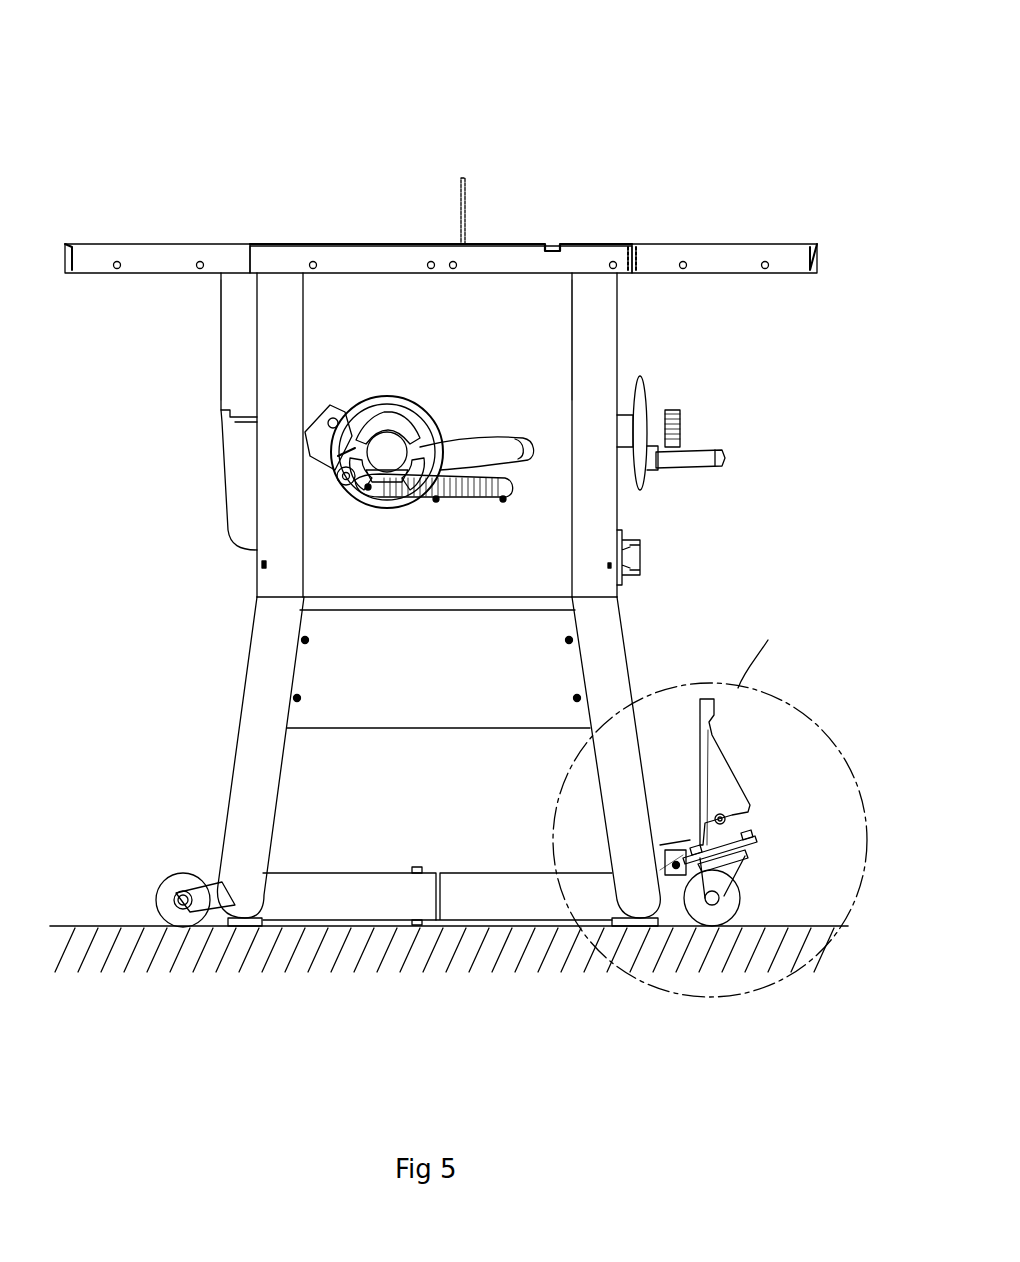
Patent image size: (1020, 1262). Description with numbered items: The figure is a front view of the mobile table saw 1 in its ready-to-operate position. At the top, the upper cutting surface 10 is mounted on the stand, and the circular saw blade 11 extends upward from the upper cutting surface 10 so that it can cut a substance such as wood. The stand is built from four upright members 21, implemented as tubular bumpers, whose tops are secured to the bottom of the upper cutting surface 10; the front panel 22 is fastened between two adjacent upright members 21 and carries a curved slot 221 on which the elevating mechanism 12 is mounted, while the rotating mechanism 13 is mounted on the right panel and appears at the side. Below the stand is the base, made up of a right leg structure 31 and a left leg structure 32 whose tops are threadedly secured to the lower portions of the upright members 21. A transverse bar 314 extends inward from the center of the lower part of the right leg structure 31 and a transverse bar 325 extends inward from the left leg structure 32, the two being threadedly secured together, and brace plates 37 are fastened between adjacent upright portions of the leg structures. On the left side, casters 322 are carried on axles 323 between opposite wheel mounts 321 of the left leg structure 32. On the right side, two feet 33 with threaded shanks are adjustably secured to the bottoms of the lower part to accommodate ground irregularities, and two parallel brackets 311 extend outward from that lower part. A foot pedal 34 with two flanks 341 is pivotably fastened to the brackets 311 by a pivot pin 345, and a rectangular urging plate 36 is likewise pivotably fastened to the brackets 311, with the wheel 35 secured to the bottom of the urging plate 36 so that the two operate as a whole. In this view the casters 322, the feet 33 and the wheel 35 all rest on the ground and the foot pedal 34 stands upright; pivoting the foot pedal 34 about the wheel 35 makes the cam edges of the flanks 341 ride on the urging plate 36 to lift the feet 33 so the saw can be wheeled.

The mobile table saw 1 is at (577, 124).
The upper cutting surface 10 is at (592, 265).
The circular saw blade 11 is at (461, 181).
The elevating mechanism 12 is at (338, 456).
The rotating mechanism 13 is at (700, 456).
The upright members 21 is at (272, 340).
The front panel 22 is at (345, 378).
The curved slot 221 is at (523, 462).
The right leg structure 31 is at (600, 657).
The left leg structure 32 is at (270, 650).
The feet 33 is at (632, 922).
The foot pedal 34 is at (735, 738).
The wheel 35 is at (720, 915).
The urging plate 36 is at (736, 841).
The brace plates 37 is at (420, 704).
The brackets 311 is at (698, 852).
The transverse bar 314 is at (526, 895).
The wheel mounts 321 is at (208, 906).
The caster 322 is at (168, 896).
The axle 323 is at (183, 893).
The transverse bar 325 is at (372, 895).
The flanks 341 is at (726, 791).
The pivot pin 345 is at (730, 822).